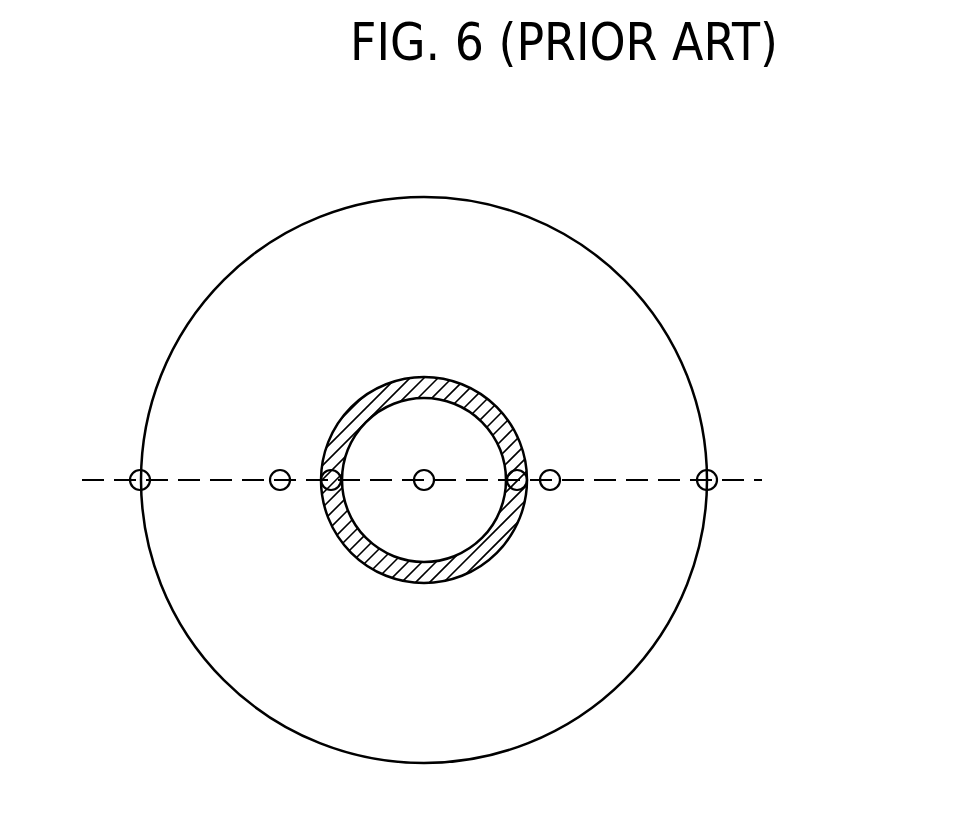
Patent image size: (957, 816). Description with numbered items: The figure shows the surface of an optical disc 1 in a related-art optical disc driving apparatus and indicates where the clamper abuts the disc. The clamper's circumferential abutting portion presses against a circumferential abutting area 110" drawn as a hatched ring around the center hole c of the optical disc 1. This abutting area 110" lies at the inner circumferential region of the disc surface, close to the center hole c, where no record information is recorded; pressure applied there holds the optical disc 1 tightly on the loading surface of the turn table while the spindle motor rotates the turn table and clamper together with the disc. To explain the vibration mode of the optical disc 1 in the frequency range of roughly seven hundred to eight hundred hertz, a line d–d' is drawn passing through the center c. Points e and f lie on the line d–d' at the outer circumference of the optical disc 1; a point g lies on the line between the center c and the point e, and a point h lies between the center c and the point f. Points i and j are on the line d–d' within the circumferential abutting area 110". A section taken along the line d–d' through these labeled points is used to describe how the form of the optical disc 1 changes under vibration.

The optical disc 1 is at (222, 311).
The circumferential abutting area 110 is at (425, 377).
The line d–d' end point d is at (419, 464).
The line d–d' end point d' is at (750, 459).
The point e is at (137, 489).
The point g is at (277, 490).
The point i is at (322, 491).
The center hole c is at (422, 490).
The point j is at (520, 470).
The point h is at (552, 470).
The point f is at (708, 470).